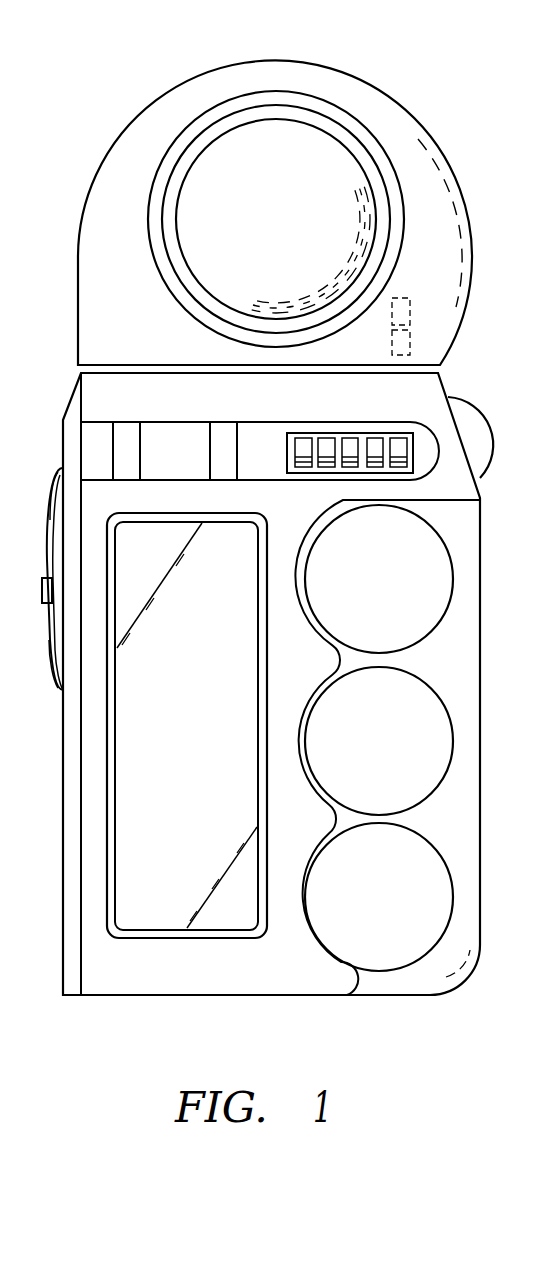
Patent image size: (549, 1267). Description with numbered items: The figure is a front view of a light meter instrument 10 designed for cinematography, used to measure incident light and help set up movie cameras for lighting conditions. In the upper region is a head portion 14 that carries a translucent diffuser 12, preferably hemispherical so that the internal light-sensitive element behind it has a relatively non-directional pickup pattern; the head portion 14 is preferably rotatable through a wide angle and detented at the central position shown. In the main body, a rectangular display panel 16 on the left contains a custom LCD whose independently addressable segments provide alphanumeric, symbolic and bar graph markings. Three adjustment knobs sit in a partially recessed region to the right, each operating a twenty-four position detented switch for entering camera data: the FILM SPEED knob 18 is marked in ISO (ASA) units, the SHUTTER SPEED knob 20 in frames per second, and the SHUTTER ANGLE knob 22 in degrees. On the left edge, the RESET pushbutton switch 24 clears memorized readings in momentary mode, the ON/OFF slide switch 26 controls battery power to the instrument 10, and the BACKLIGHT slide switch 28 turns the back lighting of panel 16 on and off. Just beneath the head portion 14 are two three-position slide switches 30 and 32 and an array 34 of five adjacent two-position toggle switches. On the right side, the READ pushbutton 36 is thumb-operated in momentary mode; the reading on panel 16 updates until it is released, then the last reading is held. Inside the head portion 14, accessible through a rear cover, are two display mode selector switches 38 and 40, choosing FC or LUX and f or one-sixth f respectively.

The light meter instrument 10 is at (178, 54).
The translucent diffuser 12 is at (275, 138).
The head portion 14 is at (138, 142).
The display panel 16 is at (130, 773).
The FILM SPEED knob 18 is at (440, 568).
The SHUTTER SPEED knob 20 is at (430, 732).
The SHUTTER ANGLE knob 22 is at (435, 893).
The RESET pushbutton switch 24 is at (47, 510).
The ON/OFF slide switch 26 is at (42, 590).
The BACKLIGHT slide switch 28 is at (48, 648).
The three-position slide switch 30 is at (113, 448).
The three-position slide switch 32 is at (217, 450).
The array of toggle switches 34 is at (387, 438).
The READ pushbutton 36 is at (482, 431).
The display mode selector switch 38 is at (411, 309).
The display mode selector switch 40 is at (411, 341).